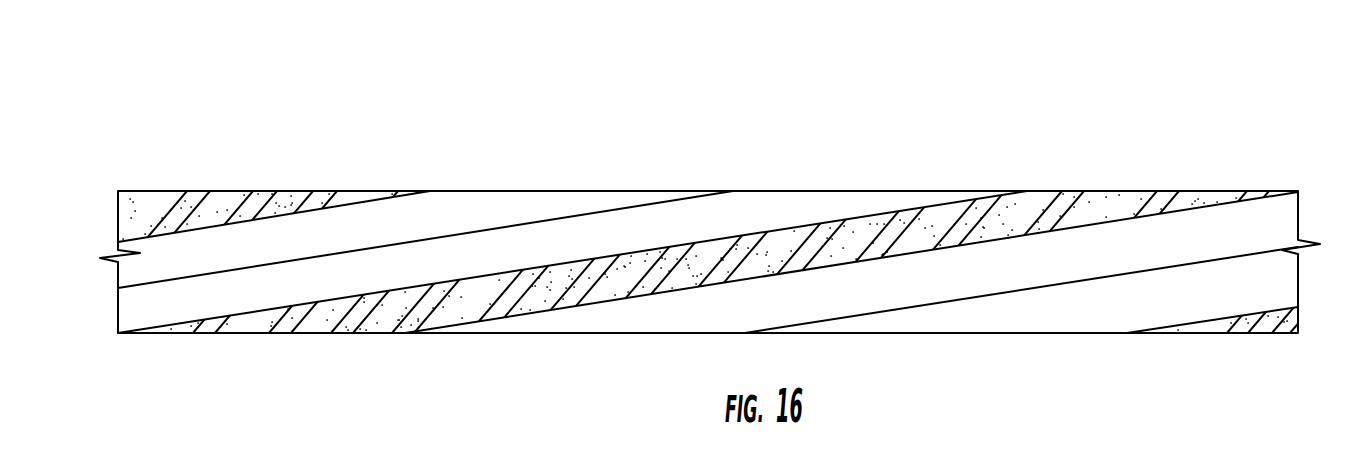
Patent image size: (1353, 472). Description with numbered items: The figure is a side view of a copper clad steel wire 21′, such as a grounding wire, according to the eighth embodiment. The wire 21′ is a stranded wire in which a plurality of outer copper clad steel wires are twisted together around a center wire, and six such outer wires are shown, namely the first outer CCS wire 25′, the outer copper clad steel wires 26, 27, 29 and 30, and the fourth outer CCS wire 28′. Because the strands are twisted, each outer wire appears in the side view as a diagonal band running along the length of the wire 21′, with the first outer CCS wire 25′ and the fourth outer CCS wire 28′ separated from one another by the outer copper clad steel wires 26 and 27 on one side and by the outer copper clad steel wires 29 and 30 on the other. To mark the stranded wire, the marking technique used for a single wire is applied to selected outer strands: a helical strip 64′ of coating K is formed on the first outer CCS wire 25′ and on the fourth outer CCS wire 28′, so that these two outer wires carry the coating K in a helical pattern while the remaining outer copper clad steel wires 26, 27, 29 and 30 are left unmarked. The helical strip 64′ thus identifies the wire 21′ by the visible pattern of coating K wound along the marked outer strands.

The wire 21′ is at (818, 118).
The first outer CCS wire 25′ is at (243, 189).
The outer copper clad steel wire 26 is at (403, 215).
The outer copper clad steel wire 27 is at (530, 245).
The fourth outer CCS wire 28′ is at (345, 347).
The outer copper clad steel wire 29 is at (627, 342).
The outer copper clad steel wire 30 is at (985, 338).
The helical strip 64′ is at (290, 190).
The coating K is at (305, 190).